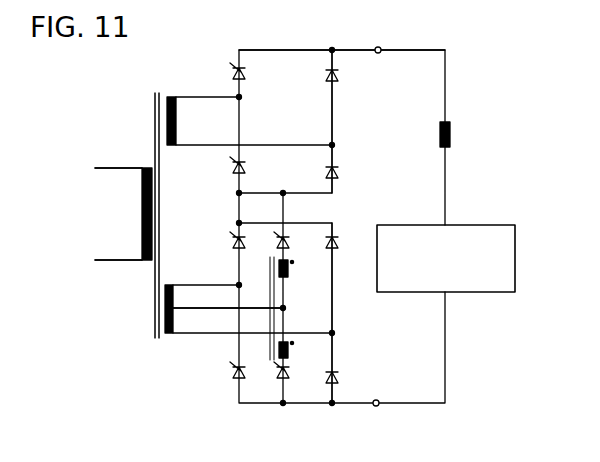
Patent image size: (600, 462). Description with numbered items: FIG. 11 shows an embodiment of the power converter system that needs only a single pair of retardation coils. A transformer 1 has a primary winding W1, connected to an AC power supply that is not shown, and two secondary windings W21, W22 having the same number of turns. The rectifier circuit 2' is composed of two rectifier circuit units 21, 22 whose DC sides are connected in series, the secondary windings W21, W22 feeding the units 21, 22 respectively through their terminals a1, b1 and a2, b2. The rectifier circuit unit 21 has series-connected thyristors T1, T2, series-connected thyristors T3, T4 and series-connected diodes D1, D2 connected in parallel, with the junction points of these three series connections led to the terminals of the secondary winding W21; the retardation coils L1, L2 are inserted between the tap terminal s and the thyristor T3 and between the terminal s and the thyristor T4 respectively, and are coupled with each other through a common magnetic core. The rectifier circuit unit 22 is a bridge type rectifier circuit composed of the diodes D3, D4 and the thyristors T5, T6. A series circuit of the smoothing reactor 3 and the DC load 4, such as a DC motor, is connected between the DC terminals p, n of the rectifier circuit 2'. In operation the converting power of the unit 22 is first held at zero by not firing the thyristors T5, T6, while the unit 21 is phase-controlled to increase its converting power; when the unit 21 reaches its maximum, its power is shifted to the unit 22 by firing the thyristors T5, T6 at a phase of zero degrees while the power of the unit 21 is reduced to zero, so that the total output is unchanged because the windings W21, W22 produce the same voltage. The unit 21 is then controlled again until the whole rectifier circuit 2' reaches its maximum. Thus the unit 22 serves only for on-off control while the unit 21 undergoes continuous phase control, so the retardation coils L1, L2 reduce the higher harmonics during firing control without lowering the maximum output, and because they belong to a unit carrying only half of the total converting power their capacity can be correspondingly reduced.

The transformer 1 is at (170, 72).
The rectifier circuit 2' is at (342, 29).
The smoothing reactor 3 is at (450, 136).
The DC load 4 is at (515, 240).
The rectifier circuit unit 21 is at (394, 335).
The rectifier circuit unit 22 is at (392, 139).
The primary winding W1 is at (142, 168).
The secondary winding W21 is at (167, 285).
The secondary winding W22 is at (188, 90).
The thyristor T1 is at (233, 242).
The thyristor T2 is at (244, 380).
The thyristor T3 is at (289, 244).
The thyristor T4 is at (289, 380).
The thyristor T5 is at (247, 71).
The thyristor T6 is at (247, 165).
The diode D1 is at (338, 242).
The diode D2 is at (339, 378).
The diode D3 is at (339, 76).
The diode D4 is at (338, 174).
The retardation coil L1 is at (289, 268).
The retardation coil L2 is at (289, 350).
The terminal a1 is at (239, 285).
The terminal a2 is at (239, 97).
The terminal b1 is at (335, 333).
The terminal b2 is at (335, 146).
The terminal s is at (286, 309).
The DC output terminal p is at (378, 49).
The DC output terminal n is at (379, 406).